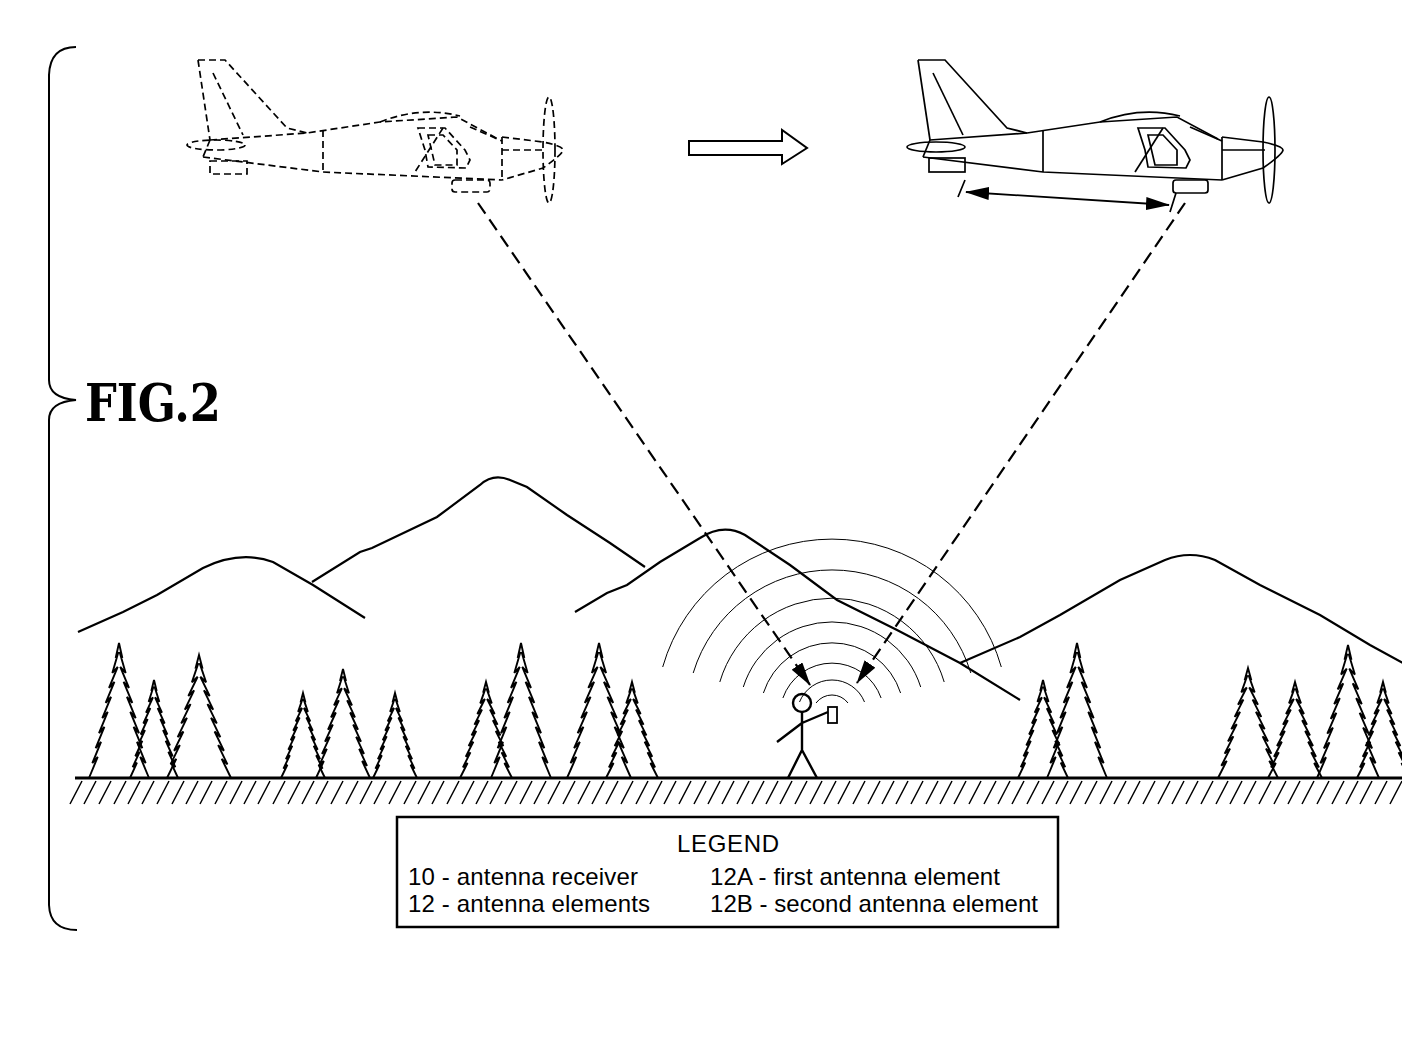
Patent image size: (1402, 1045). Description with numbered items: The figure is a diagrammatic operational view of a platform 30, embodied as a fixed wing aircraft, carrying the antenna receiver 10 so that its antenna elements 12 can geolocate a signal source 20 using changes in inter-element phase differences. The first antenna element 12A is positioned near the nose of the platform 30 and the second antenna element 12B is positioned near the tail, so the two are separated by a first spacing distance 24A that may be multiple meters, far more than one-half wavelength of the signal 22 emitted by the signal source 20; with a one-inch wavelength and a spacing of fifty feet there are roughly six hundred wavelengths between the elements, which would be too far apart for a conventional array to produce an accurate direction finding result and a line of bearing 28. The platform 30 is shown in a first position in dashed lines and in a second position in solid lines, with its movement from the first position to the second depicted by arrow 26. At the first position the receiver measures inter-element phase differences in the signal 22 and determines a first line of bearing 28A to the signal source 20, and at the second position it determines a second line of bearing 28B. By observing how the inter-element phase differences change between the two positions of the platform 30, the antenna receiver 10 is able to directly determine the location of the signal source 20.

The antenna receiver 10 is at (943, 197).
The antenna elements 12 is at (760, 221).
The first antenna element 12A is at (1200, 196).
The second antenna element 12B is at (940, 173).
The signal source 20 is at (833, 724).
The signal 22 is at (862, 540).
The first spacing distance 24A is at (1064, 202).
The arrow 26 is at (733, 140).
The line of bearing 28 is at (831, 444).
The first line of bearing 28A is at (573, 338).
The second line of bearing 28B is at (1083, 352).
The platform 30 is at (1130, 106).